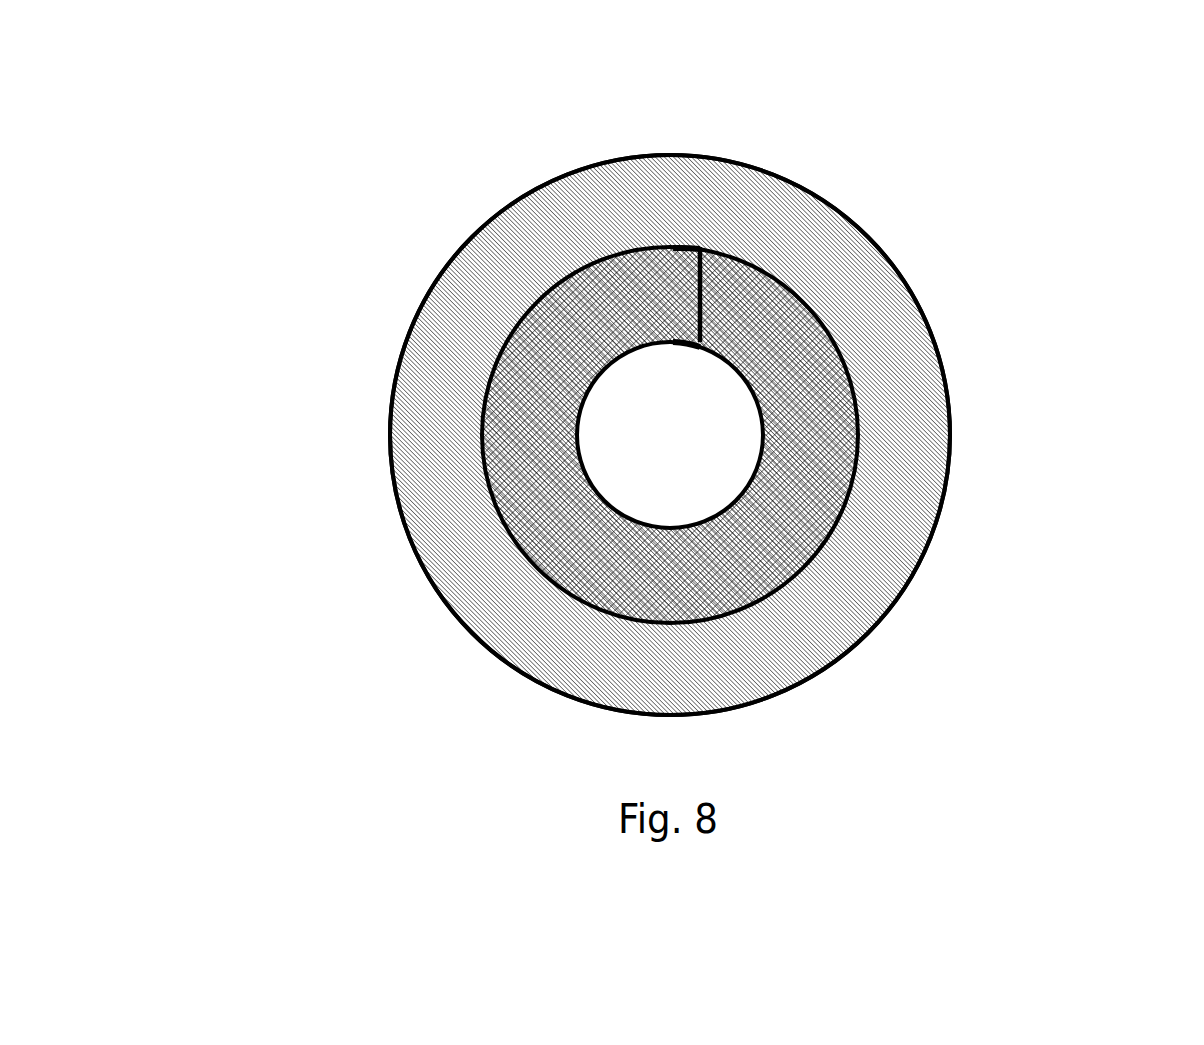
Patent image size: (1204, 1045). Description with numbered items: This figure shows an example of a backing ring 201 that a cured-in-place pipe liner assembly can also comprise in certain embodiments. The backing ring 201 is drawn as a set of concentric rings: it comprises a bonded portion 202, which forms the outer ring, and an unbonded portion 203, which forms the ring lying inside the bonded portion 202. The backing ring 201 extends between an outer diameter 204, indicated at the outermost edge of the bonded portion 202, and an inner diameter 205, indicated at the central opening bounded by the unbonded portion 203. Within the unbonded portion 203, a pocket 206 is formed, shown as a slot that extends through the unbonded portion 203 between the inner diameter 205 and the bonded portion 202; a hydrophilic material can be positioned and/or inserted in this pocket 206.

The backing ring 201 is at (447, 100).
The bonded portion 202 is at (453, 542).
The unbonded portion 203 is at (788, 377).
The outer diameter 204 is at (950, 433).
The inner diameter 205 is at (578, 428).
The pocket 206 is at (789, 200).